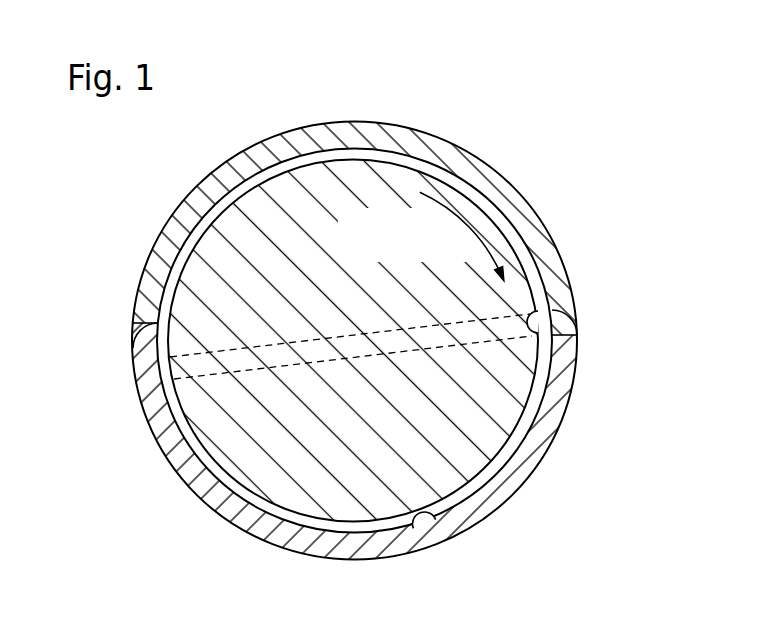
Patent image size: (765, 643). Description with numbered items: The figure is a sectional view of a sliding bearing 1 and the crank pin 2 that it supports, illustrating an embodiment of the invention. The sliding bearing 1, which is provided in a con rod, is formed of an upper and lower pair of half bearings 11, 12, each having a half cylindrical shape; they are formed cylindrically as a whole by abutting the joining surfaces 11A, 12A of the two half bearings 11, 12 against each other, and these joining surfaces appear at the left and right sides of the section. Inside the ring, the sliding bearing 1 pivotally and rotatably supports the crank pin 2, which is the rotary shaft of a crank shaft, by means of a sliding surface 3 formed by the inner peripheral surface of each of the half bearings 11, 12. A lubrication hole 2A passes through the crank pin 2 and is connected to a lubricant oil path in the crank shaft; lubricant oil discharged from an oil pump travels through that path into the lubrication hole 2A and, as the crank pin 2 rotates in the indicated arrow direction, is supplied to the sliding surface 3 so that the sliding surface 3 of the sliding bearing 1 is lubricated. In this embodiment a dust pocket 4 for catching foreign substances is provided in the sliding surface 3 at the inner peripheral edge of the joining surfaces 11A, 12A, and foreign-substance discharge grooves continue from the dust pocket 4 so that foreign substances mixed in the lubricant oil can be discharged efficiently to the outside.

The sliding bearing 1 is at (543, 190).
The crank pin 2 is at (383, 192).
The lubrication hole 2A is at (345, 336).
The sliding surface 3 is at (436, 519).
The dust pocket 4 is at (526, 311).
The half bearing 11 is at (473, 170).
The joining surface 11A is at (133, 350).
The half bearing 12 is at (533, 441).
The joining surface 12A is at (132, 323).